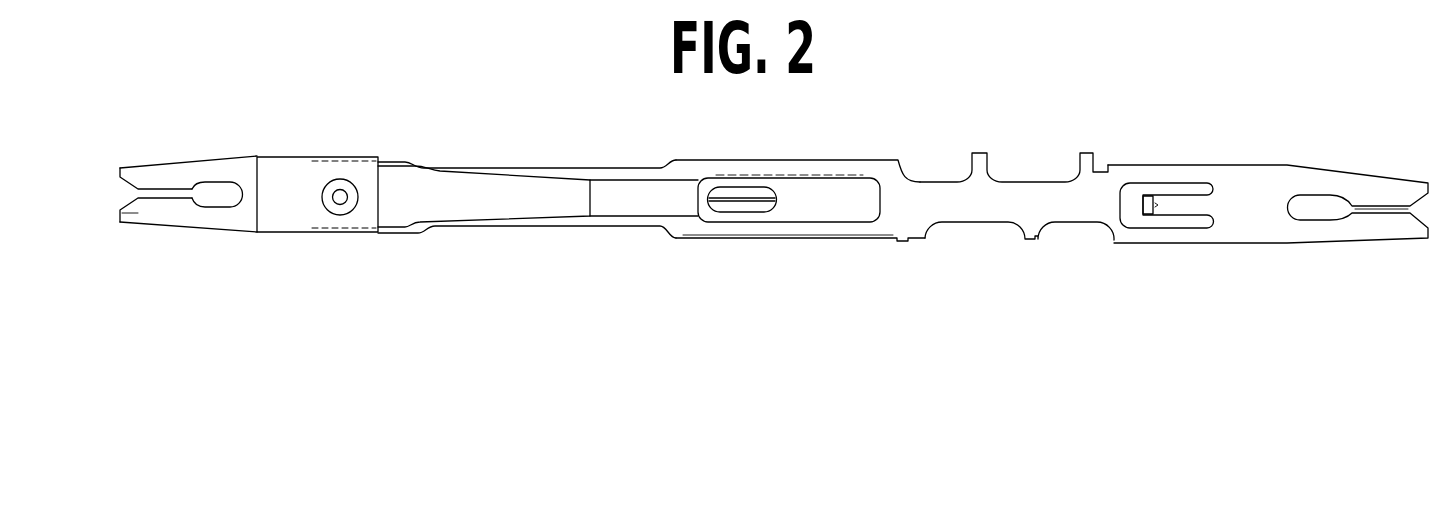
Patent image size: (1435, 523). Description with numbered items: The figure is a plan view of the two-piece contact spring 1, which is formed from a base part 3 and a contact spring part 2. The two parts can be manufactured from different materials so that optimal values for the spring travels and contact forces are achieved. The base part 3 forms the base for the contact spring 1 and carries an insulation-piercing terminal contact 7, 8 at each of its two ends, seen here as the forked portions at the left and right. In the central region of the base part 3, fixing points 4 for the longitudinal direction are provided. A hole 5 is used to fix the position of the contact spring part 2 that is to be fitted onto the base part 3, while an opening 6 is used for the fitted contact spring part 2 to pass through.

The contact spring 1 is at (432, 126).
The contact spring part 2 is at (502, 190).
The base part 3 is at (1178, 231).
The fixing points 4 is at (1077, 158).
The hole 5 is at (340, 205).
The opening 6 is at (882, 201).
The insulation-piercing terminal contact 7 is at (207, 217).
The insulation-piercing terminal contact 8 is at (1328, 183).